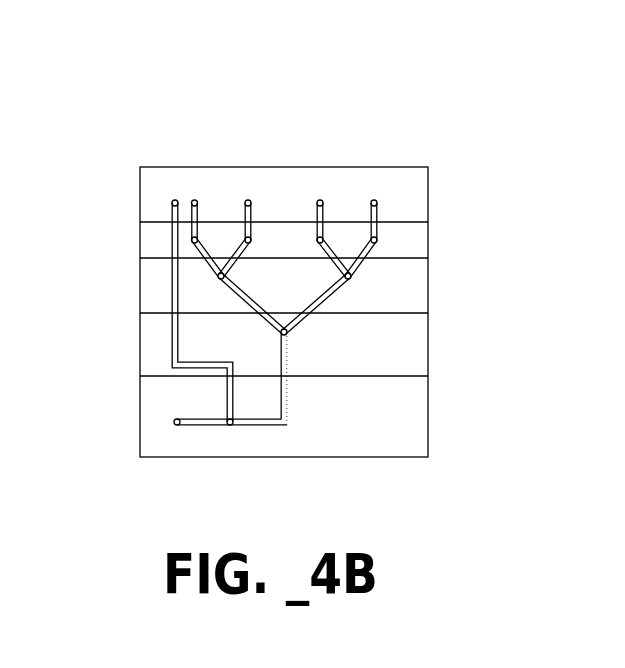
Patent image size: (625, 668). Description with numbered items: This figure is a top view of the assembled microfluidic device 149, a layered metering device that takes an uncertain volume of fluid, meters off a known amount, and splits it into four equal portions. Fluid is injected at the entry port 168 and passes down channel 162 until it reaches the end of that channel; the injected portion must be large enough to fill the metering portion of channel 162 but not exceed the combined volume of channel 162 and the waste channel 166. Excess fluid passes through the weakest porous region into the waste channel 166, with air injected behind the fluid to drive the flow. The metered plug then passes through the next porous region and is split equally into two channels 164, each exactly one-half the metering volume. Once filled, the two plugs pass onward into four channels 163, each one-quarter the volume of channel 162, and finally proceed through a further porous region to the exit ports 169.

The microfluidic device 149 is at (104, 92).
The channel 162 is at (287, 399).
The channel 163 is at (363, 261).
The channel 164 is at (322, 304).
The waste channel 166 is at (172, 279).
The entry port 168 is at (175, 424).
The exit port 169 is at (374, 200).